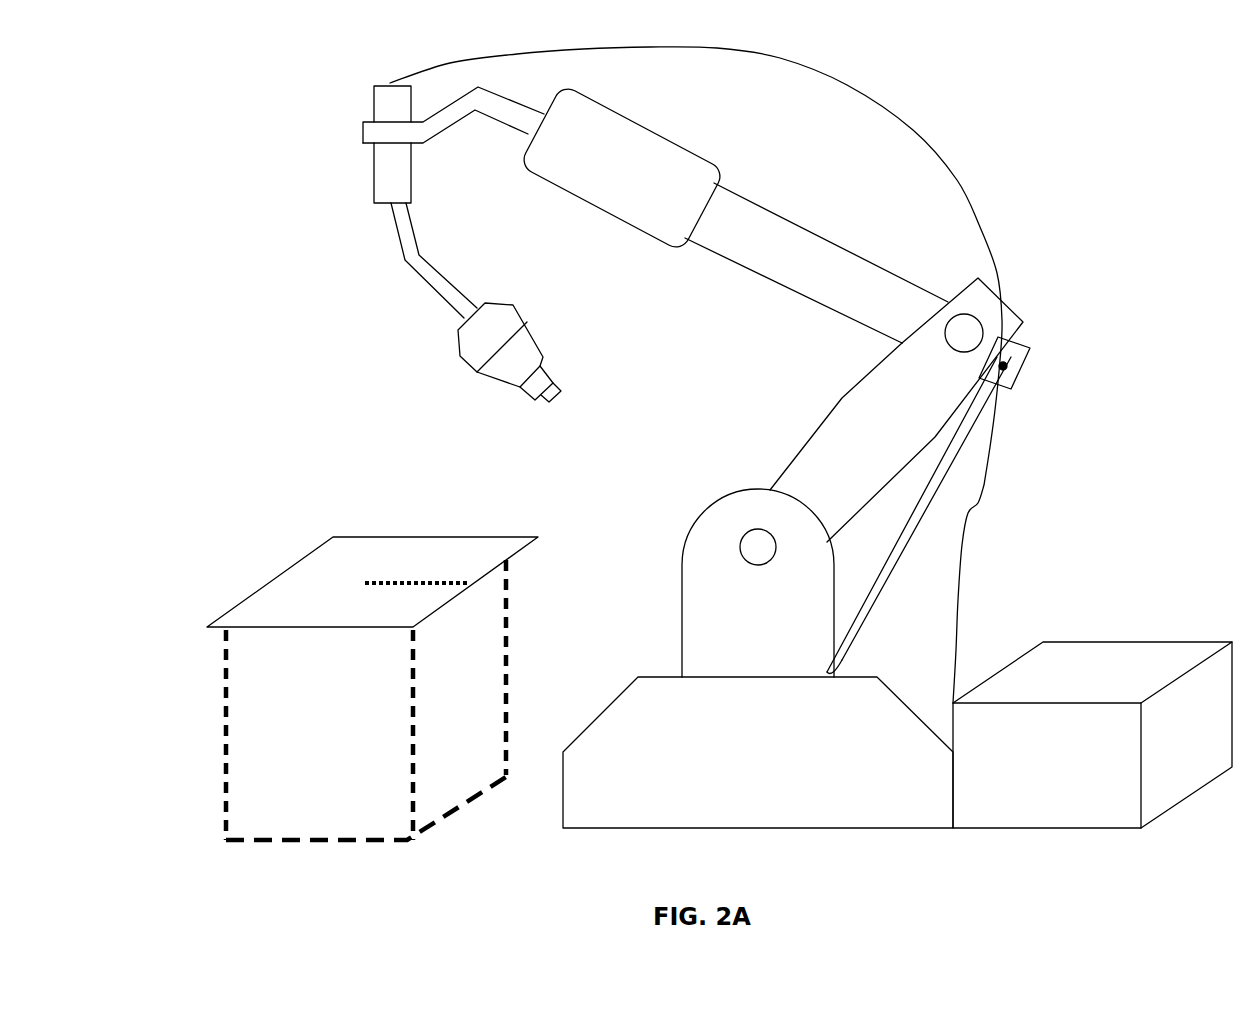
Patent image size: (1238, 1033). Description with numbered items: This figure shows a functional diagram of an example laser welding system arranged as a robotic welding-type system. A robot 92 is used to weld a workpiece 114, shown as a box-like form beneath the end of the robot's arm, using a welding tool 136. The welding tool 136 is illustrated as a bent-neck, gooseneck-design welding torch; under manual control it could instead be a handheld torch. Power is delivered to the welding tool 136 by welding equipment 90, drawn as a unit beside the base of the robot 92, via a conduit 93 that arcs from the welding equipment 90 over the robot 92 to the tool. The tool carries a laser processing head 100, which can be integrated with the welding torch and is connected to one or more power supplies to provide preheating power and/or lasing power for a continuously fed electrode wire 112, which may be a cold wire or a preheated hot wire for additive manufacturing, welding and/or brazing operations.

The welding equipment 90 is at (1052, 640).
The robot 92 is at (262, 124).
The conduit 93 is at (957, 180).
The laser processing head 100 is at (520, 390).
The electrode wire 112 is at (553, 392).
The workpiece 114 is at (297, 587).
The welding tool 136 is at (527, 322).